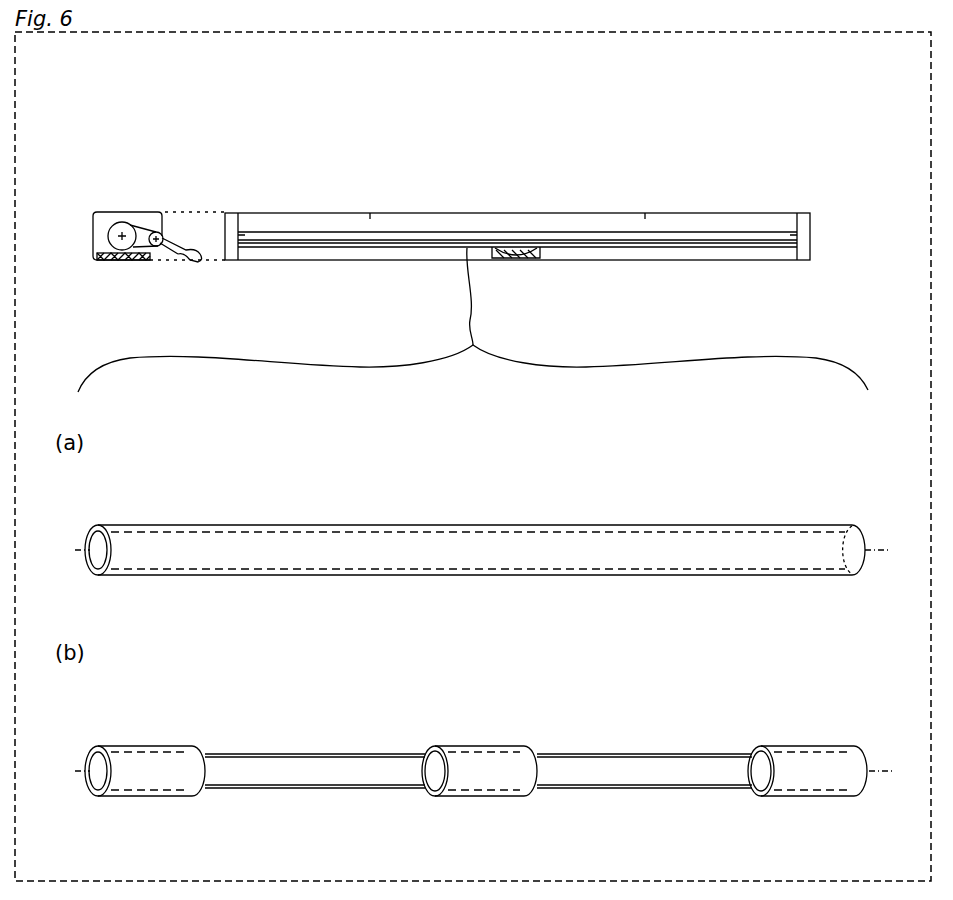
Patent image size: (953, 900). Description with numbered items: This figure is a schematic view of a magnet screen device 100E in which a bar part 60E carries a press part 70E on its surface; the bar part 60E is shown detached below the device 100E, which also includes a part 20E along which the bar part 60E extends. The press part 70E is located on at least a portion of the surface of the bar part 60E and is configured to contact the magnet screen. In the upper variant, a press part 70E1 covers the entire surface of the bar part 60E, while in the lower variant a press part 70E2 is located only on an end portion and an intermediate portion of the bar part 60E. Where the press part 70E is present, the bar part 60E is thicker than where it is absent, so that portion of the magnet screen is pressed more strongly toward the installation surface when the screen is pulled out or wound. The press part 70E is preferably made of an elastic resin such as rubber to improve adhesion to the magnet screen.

The liquid ejecting apparatus 100E is at (803, 146).
The carriage / head unit 20E is at (796, 212).
The bar part 60E is at (86, 540).
The press part 70E is at (482, 628).
The press part 70E1 is at (162, 540).
The press part 70E2 is at (162, 762).